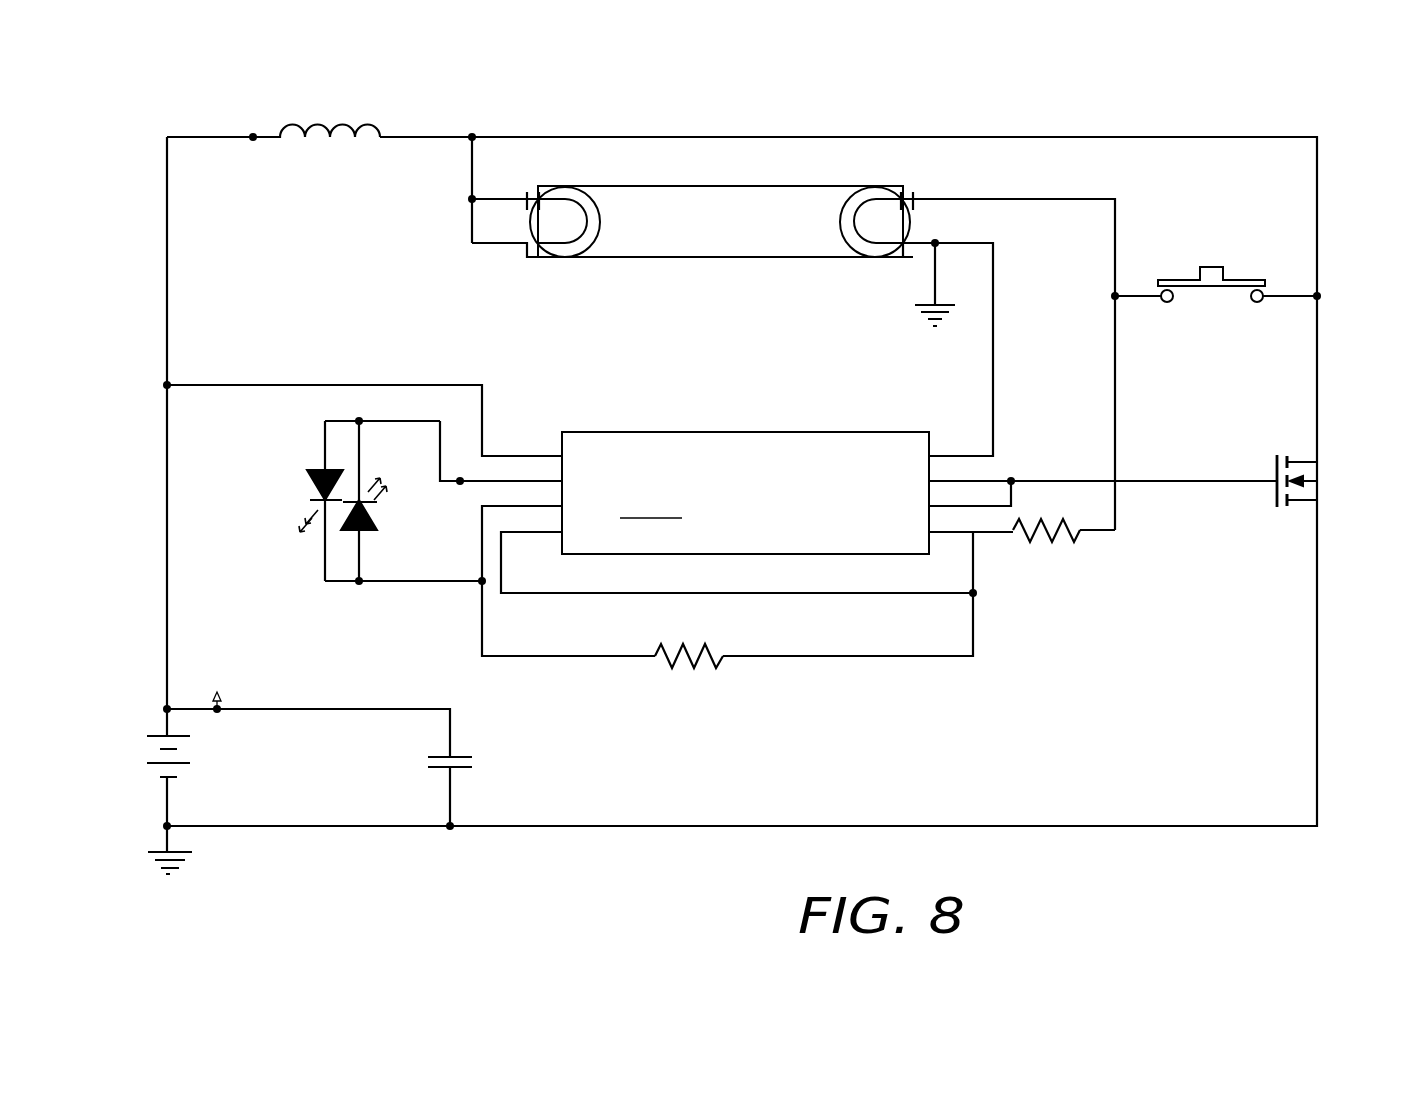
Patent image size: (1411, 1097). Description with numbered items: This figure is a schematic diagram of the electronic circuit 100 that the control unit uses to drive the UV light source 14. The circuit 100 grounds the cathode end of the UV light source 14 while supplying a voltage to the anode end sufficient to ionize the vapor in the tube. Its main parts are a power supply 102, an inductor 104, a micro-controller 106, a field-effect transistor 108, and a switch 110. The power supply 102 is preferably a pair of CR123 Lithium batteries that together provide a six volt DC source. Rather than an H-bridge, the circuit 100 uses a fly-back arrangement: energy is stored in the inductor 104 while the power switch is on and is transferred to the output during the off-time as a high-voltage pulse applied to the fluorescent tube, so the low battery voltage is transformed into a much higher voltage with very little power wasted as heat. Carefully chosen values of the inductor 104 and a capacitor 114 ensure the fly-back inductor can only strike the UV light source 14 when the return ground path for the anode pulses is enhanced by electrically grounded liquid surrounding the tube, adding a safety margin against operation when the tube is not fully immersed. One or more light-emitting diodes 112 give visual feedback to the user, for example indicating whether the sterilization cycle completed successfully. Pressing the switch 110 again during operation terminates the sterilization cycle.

The electronic circuit 100 is at (198, 108).
The inductor 104 is at (383, 129).
The UV light source 14 is at (667, 186).
The switch 110 is at (1243, 281).
The micro-controller 106 is at (872, 432).
The field-effect transistor 108 is at (1317, 497).
The light-emitting diodes 112 is at (316, 485).
The power supply 102 is at (157, 750).
The capacitor 114 is at (474, 763).